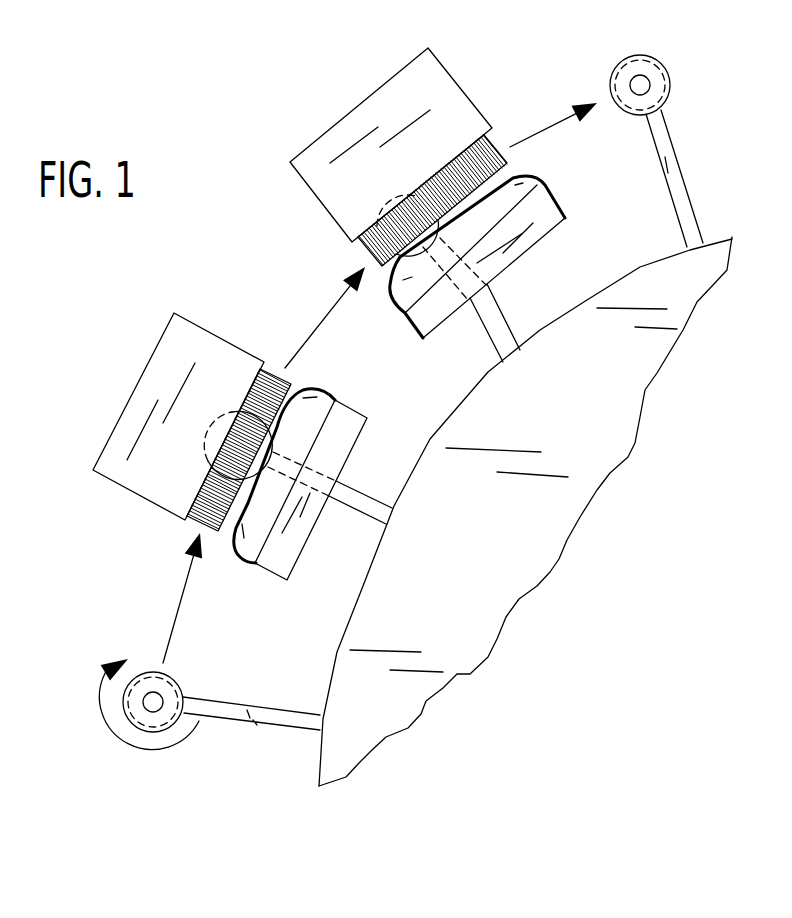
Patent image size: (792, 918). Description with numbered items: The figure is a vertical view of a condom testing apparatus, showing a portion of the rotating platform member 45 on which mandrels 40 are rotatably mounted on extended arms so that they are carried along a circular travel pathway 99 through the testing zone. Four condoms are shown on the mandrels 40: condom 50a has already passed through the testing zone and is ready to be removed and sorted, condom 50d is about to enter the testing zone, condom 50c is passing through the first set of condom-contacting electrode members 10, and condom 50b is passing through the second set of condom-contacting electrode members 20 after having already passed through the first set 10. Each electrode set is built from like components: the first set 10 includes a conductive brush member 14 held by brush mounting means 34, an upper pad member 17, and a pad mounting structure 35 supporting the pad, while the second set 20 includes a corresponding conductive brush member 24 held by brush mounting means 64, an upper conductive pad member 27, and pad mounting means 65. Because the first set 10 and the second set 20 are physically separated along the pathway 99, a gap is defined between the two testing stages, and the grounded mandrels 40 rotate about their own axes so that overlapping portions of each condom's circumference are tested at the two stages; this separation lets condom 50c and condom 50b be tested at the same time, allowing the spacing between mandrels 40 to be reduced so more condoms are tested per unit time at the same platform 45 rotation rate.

The first set of condom-contacting electrode members 10 is at (97, 391).
The second set of condom-contacting electrode members 20 is at (312, 82).
The conductive brush member 14 is at (273, 368).
The conductive brush member 24 is at (490, 137).
The upper pad member 17 is at (333, 387).
The upper conductive pad member 27 is at (550, 182).
The brush mounting means 34 is at (193, 340).
The brush mounting means 64 is at (437, 83).
The mounting block 35 is at (367, 412).
The pad mounting means 65 is at (567, 210).
The mandrel 40 is at (662, 52).
The platform member 45 is at (690, 220).
The condom 50a is at (662, 82).
The condom 50b is at (397, 268).
The condom 50c is at (310, 368).
The condom 50d is at (187, 682).
The travel pathway 99 is at (548, 117).